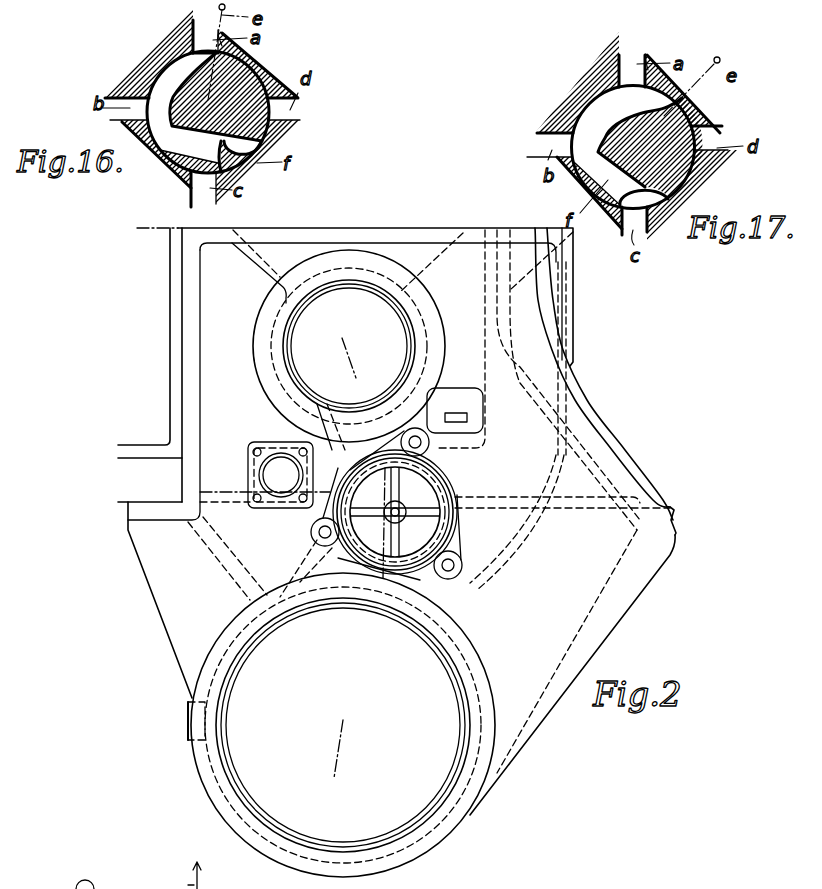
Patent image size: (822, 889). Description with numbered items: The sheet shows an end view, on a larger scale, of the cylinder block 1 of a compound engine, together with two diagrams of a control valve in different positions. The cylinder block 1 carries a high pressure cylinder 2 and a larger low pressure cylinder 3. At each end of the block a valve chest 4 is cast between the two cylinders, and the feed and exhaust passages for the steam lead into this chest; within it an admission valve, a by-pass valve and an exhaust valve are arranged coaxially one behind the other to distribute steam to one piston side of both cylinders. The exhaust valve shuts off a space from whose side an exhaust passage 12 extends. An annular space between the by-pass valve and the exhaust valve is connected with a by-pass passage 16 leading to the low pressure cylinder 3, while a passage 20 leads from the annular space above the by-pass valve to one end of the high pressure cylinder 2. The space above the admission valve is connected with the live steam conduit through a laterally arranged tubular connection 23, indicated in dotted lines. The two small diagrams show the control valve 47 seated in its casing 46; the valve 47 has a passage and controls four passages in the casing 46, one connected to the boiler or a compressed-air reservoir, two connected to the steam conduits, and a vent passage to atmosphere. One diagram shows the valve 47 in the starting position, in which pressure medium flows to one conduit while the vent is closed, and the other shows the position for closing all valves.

In FIG. 2, the cylinder block 1 is at (222, 352).
In FIG. 2, the high pressure cylinder 2 is at (313, 318).
In FIG. 2, the low pressure cylinder 3 is at (238, 743).
In FIG. 2, the valve chest 4 is at (457, 483).
In FIG. 2, the exhaust passage 12 is at (537, 455).
In FIG. 2, the by-pass passage 16 is at (325, 577).
In FIG. 2, the passage 20 is at (338, 430).
In FIG. 2, the tubular connection 23 is at (285, 487).
In FIG. 16, the casing 46 is at (160, 64).
In FIG. 17, the casing 46 is at (587, 193).
In FIG. 16, the control valve 47 is at (167, 170).
In FIG. 17, the control valve 47 is at (680, 120).